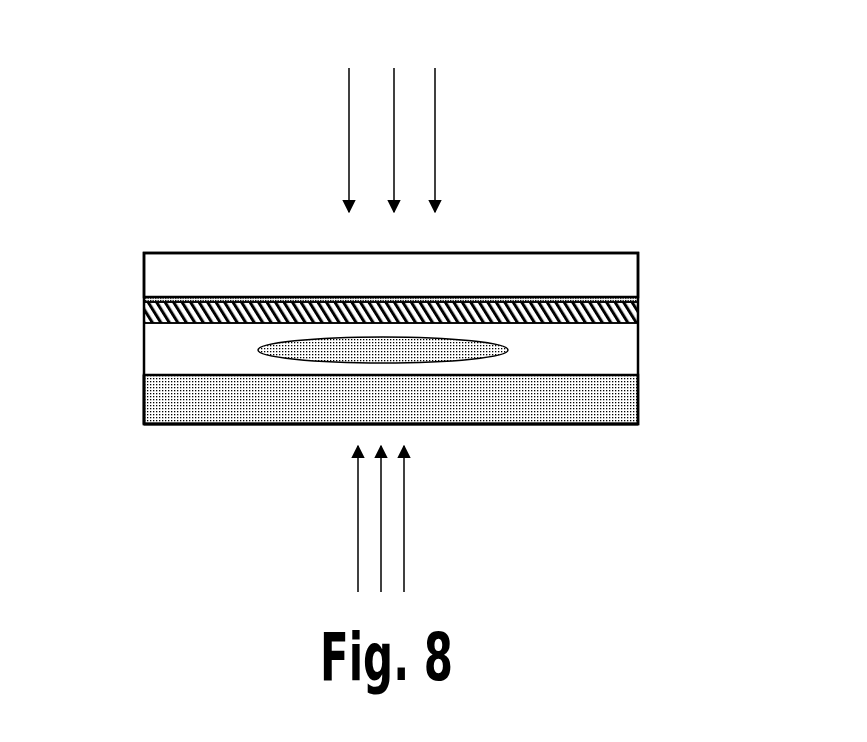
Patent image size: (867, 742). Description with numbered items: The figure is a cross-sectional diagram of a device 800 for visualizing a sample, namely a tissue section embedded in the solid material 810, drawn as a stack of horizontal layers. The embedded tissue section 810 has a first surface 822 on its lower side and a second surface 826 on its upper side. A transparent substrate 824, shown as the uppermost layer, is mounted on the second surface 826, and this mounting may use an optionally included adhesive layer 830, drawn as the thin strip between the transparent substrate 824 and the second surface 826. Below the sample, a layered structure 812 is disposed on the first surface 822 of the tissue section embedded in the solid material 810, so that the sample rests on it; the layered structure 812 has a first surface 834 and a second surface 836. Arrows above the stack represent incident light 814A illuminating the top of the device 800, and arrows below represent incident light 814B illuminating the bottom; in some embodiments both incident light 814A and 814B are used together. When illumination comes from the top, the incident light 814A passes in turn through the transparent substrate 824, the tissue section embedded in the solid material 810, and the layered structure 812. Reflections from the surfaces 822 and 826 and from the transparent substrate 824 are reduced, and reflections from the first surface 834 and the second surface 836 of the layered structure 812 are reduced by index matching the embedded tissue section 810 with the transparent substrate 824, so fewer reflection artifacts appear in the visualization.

The device for visualizing a sample 800 is at (280, 132).
The tissue section embedded in the solid material 810 is at (153, 360).
The layered structure 812 is at (481, 432).
The incident light 814A is at (436, 117).
The incident light 814B is at (357, 527).
The first surface 822 is at (638, 375).
The transparent substrate 824 is at (470, 252).
The second surface 826 is at (638, 321).
The adhesive layer 830 is at (638, 310).
The first surface of layered structure 834 is at (147, 428).
The second surface of layered structure 836 is at (143, 389).